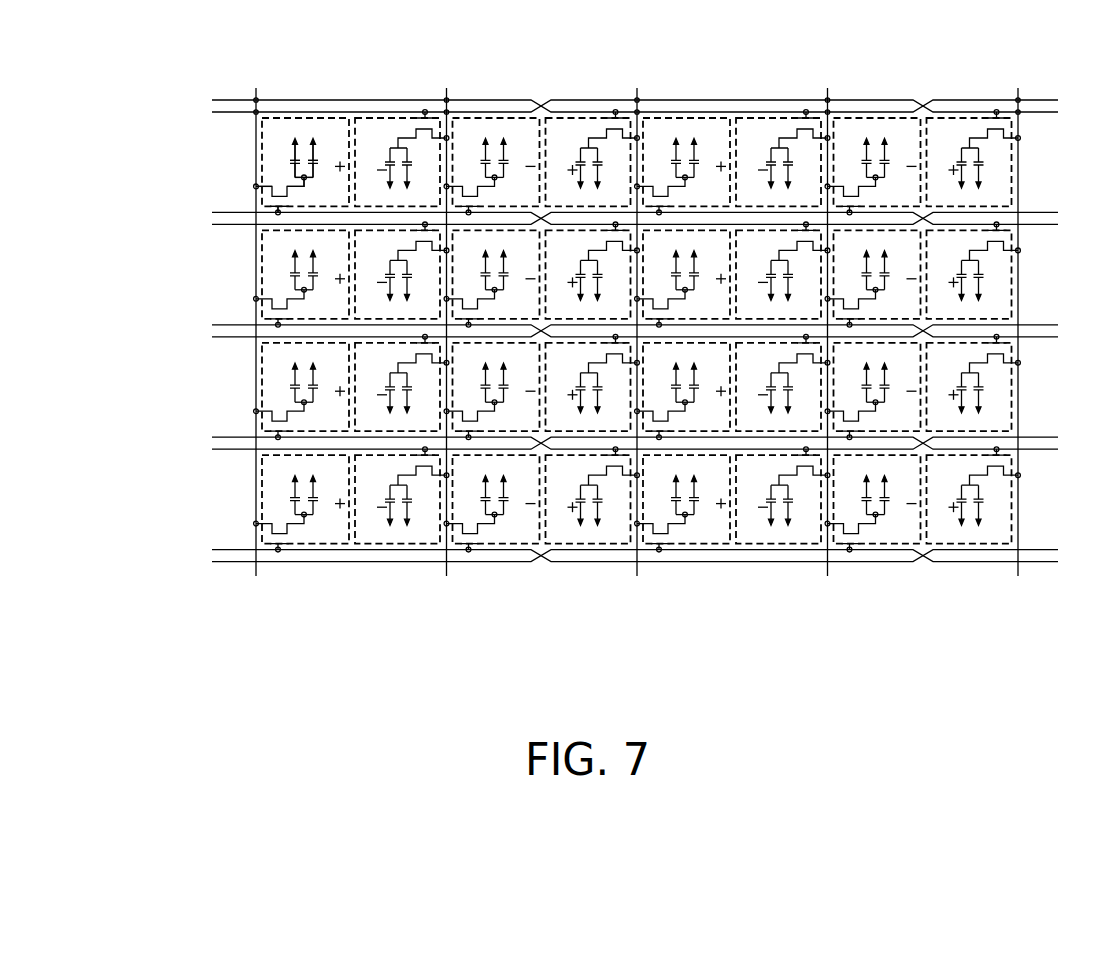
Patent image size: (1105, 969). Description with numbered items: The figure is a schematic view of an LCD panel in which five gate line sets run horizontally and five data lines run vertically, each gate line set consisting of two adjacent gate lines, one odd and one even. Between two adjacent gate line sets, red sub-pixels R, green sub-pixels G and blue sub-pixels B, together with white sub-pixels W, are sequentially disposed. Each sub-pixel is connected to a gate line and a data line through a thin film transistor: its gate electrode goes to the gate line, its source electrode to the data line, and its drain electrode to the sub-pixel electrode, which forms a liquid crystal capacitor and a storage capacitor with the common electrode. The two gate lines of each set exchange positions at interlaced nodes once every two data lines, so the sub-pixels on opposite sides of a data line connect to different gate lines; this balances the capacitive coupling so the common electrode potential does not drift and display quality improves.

The red sub-pixel R is at (337, 147).
The white sub-pixel W is at (373, 120).
The green sub-pixel G is at (523, 137).
The blue sub-pixel B is at (578, 132).